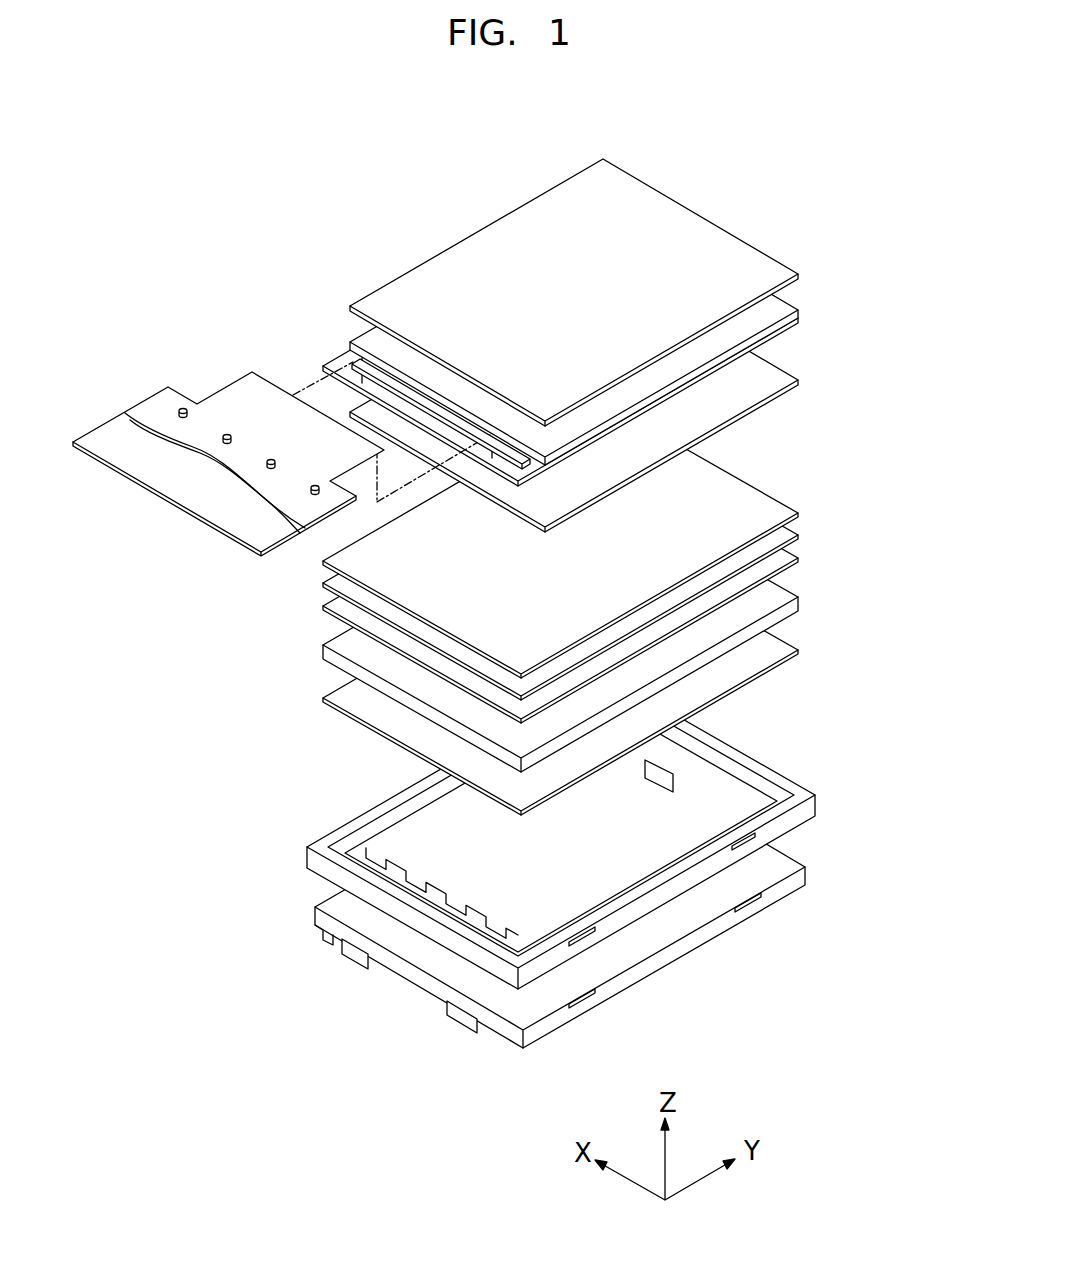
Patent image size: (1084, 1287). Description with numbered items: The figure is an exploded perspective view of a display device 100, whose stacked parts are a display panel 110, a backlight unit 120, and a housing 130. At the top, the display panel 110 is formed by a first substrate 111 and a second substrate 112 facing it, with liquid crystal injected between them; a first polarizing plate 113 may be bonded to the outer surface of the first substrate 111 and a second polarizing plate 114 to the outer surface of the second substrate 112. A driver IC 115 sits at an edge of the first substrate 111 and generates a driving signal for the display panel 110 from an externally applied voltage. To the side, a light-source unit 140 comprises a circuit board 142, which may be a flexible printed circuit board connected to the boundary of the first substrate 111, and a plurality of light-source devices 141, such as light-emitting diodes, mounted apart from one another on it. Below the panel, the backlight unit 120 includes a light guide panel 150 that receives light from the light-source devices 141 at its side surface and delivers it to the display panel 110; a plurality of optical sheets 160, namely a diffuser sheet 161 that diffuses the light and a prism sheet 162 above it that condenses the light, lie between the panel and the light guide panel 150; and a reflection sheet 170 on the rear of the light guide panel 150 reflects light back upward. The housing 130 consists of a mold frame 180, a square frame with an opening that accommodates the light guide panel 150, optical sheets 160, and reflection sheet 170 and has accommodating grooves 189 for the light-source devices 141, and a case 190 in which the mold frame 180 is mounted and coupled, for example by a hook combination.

The display device 100 is at (500, 592).
The display panel 110 is at (607, 345).
The first substrate 111 is at (798, 322).
The second substrate 112 is at (797, 310).
The first polarizing plate 113 is at (802, 383).
The second polarizing plate 114 is at (780, 270).
The driver IC 115 is at (352, 366).
The backlight unit 120 is at (617, 724).
The housing 130 is at (617, 861).
The light-source unit 140 is at (228, 455).
The light-source device 141 is at (182, 408).
The circuit board 142 is at (102, 432).
The light guide panel 150 is at (799, 607).
The optical sheets 160 is at (625, 561).
The diffuser sheet 161 is at (797, 557).
The prism sheet 162 is at (795, 534).
The reflection sheet 170 is at (798, 650).
The mold frame 180 is at (778, 757).
The accommodating grooves 189 is at (495, 902).
The case 190 is at (763, 917).